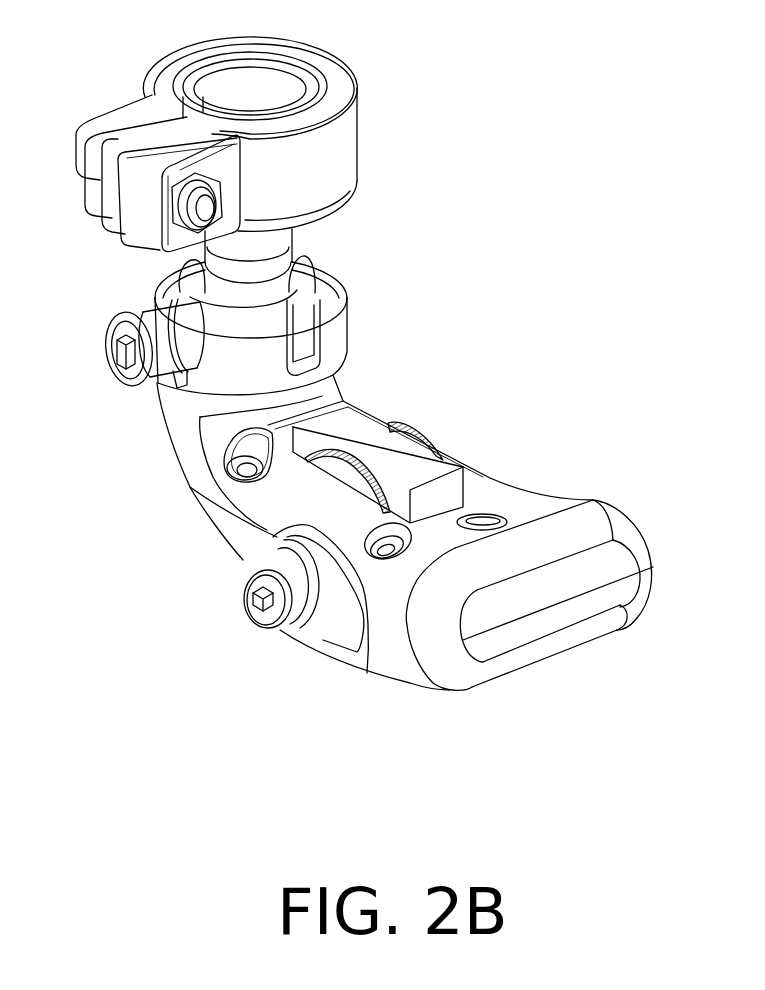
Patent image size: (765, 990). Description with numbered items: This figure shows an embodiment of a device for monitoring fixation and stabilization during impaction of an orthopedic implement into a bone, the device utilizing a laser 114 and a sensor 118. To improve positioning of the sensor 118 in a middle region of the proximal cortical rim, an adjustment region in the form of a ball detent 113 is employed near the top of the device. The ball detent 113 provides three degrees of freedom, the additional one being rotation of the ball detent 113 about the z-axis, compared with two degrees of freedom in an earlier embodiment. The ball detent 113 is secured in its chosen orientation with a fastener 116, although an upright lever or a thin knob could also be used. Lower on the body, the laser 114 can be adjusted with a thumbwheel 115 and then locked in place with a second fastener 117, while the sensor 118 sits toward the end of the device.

The ball detent 113 is at (300, 280).
The laser 114 is at (403, 458).
The thumbwheel 115 is at (440, 444).
The fastener 116 is at (106, 374).
The fastener 117 is at (250, 617).
The sensor 118 is at (490, 513).